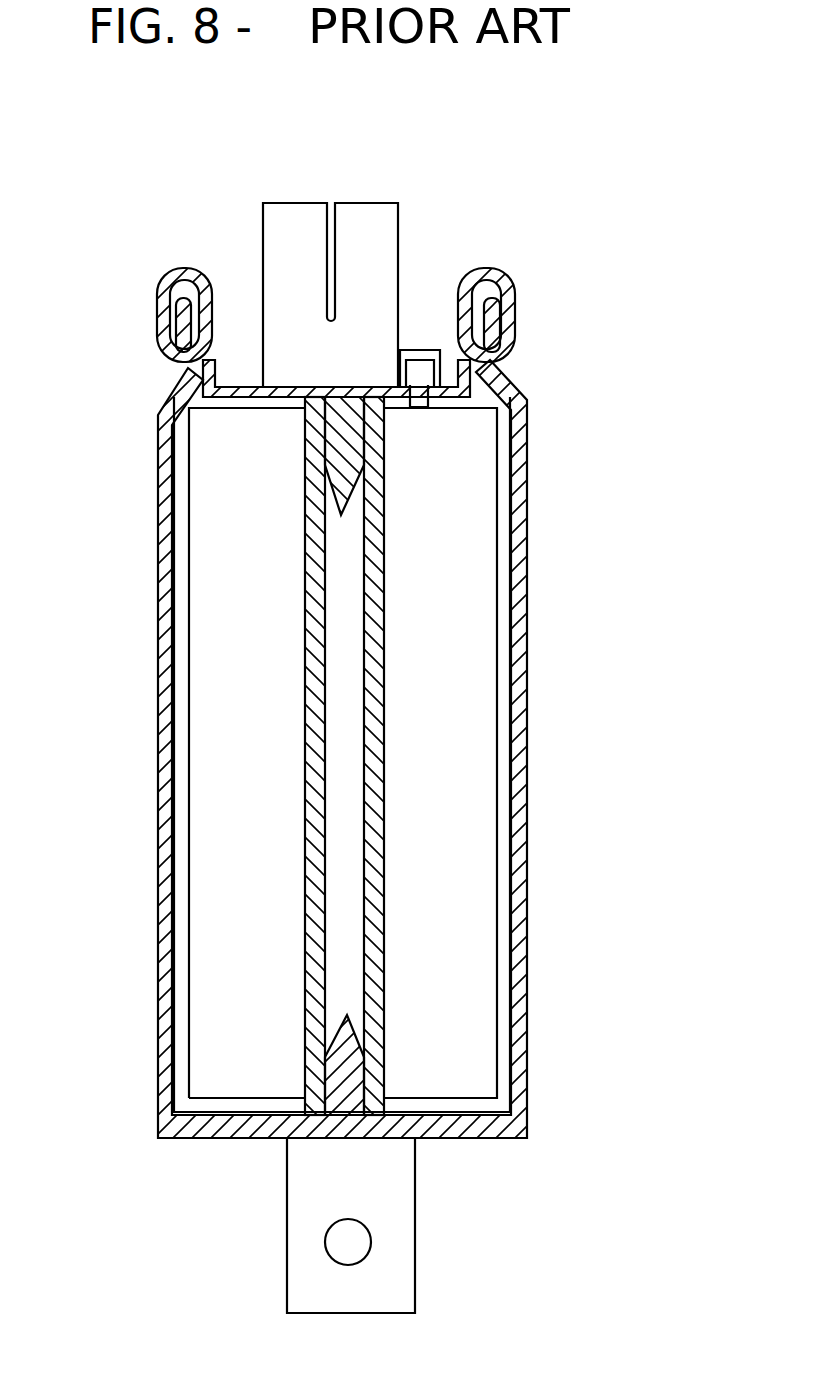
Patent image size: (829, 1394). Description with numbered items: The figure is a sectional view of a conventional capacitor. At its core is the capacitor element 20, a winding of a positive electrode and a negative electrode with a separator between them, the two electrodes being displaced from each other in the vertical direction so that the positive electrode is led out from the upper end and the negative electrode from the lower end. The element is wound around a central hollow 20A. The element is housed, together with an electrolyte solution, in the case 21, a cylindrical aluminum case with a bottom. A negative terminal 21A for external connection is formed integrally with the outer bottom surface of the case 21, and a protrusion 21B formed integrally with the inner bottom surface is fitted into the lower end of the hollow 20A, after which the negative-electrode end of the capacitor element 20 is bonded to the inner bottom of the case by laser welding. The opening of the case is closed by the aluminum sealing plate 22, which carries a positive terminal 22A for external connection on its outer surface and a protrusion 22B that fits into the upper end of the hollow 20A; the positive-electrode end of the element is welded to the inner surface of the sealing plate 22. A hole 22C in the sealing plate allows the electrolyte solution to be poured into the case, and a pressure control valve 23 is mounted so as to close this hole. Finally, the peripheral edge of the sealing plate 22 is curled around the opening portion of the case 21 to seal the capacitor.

The capacitor element 20 is at (207, 722).
The hollow 20A is at (350, 893).
The case 21 is at (518, 688).
The negative terminal 21A is at (303, 1190).
The protrusion 21B is at (341, 1034).
The sealing plate 22 is at (345, 385).
The positive terminal 22A is at (293, 215).
The protrusion 22B is at (337, 440).
The hole 22C is at (417, 400).
The pressure control valve 23 is at (418, 350).